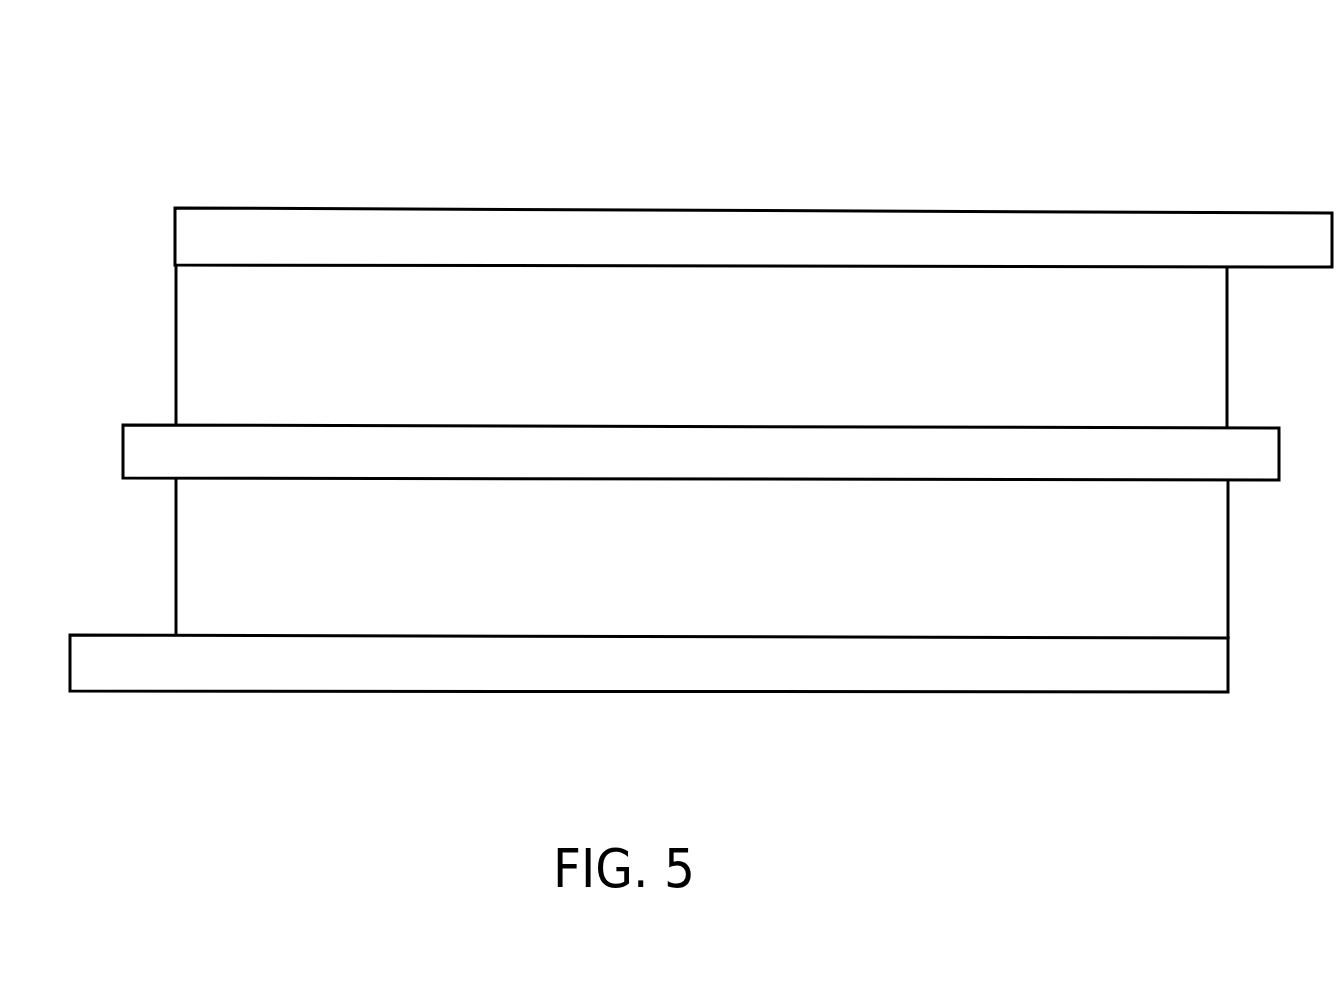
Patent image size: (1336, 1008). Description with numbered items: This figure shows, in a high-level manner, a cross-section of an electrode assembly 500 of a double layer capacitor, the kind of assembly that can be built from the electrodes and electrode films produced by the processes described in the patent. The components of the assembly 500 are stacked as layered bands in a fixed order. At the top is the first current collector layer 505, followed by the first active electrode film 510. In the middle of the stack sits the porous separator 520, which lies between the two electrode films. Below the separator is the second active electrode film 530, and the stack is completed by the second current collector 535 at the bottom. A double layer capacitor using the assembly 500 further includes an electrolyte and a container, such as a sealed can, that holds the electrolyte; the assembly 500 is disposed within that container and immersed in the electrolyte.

The electrode assembly 500 is at (662, 100).
The first current collector layer 505 is at (753, 237).
The first active electrode film 510 is at (701, 346).
The porous separator 520 is at (701, 452).
The second active electrode film 530 is at (702, 558).
The second current collector 535 is at (649, 663).